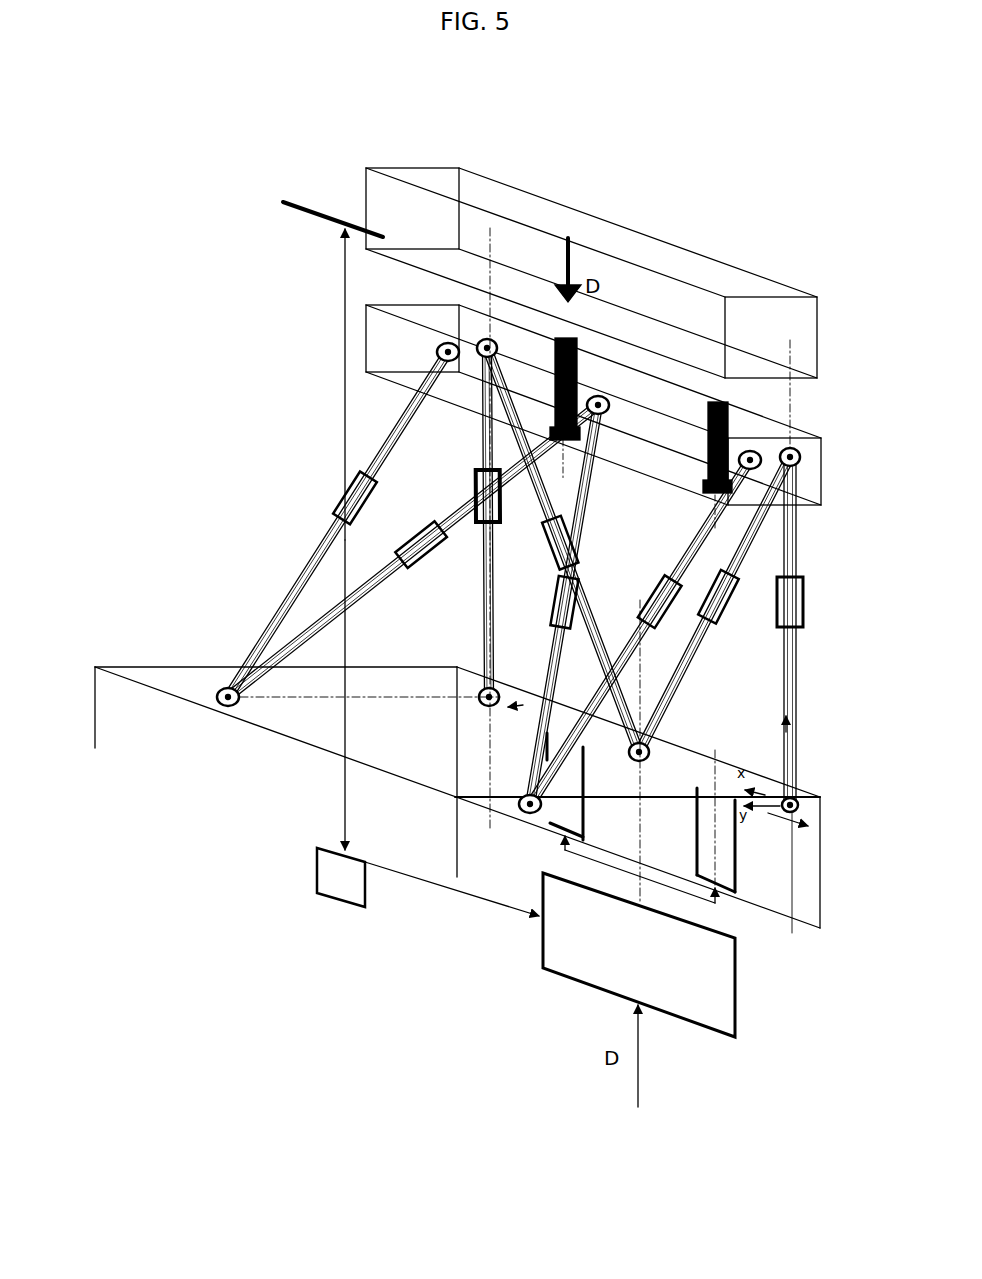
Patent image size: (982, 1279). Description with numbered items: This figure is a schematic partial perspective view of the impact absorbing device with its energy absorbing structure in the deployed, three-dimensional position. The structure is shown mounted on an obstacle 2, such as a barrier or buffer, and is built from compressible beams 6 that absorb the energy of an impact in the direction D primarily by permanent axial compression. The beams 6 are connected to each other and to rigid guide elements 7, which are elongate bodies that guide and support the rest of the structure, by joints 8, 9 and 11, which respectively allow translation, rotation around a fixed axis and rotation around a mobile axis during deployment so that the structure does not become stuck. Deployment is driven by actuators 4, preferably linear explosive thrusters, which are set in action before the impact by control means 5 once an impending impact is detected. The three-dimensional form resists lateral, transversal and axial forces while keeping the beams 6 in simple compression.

The obstacle 2 is at (377, 190).
The rigid guide elements 7 is at (370, 338).
The compressible beams 6 is at (300, 563).
The actuators 4 is at (728, 425).
The joint 11 is at (802, 457).
The joint 8 is at (806, 601).
The joint 9 is at (810, 797).
The control means 5 is at (342, 890).